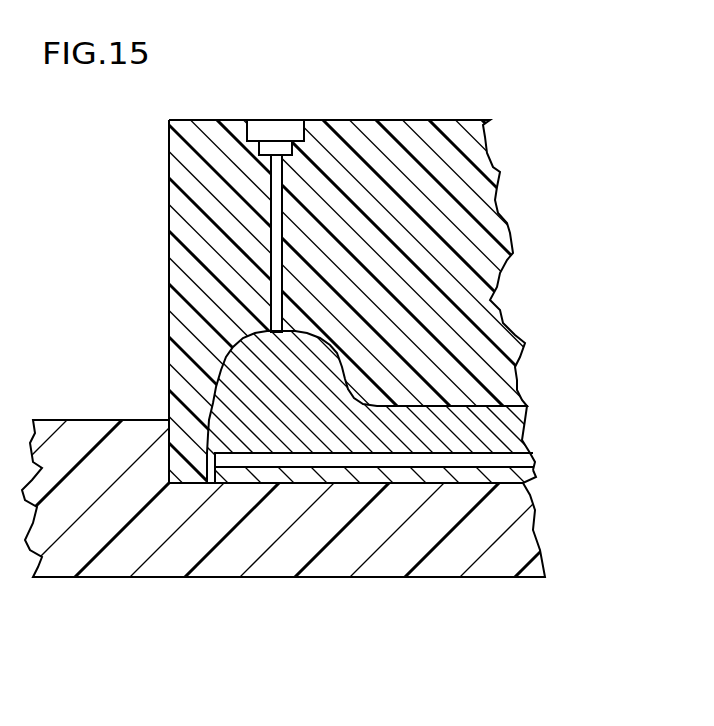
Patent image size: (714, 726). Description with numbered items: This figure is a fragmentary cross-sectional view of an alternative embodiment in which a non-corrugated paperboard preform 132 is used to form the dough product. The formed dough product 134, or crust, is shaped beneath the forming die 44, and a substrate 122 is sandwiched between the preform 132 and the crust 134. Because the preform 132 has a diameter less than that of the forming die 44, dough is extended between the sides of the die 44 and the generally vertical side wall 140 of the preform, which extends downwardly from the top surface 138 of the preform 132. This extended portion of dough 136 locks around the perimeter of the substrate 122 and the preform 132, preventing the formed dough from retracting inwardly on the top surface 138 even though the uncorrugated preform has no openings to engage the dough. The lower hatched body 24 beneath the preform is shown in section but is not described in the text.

The forming die 44 is at (513, 333).
The formed dough product 134 is at (527, 410).
The substrate 122 is at (518, 459).
The non-corrugated paperboard preform 132 is at (535, 477).
The base member 24 is at (535, 522).
The extended portion of dough 136 is at (209, 483).
The generally vertical side wall 140 is at (217, 483).
The top surface 138 is at (252, 467).